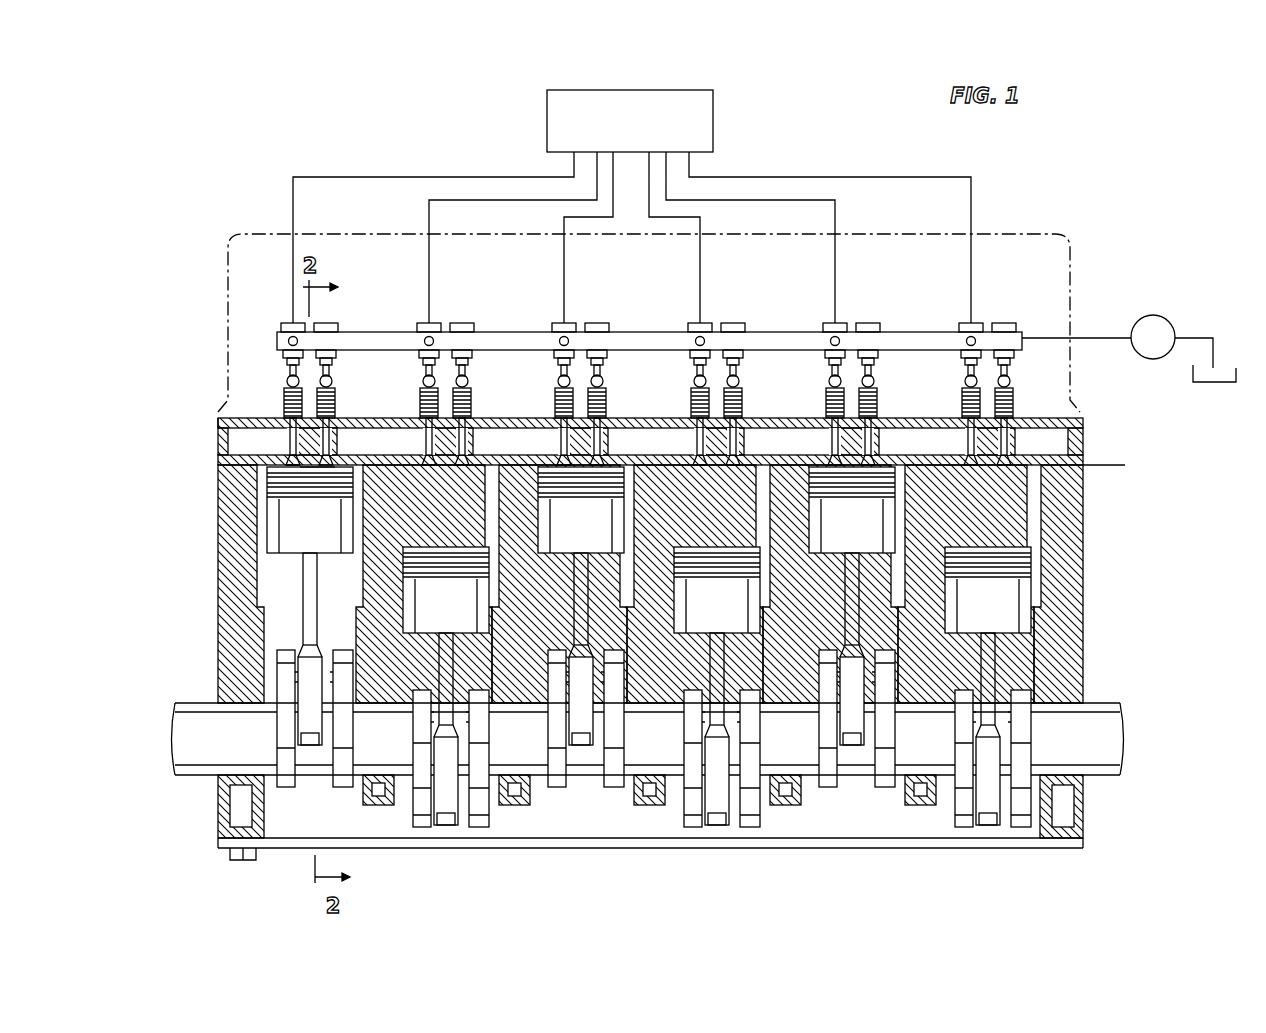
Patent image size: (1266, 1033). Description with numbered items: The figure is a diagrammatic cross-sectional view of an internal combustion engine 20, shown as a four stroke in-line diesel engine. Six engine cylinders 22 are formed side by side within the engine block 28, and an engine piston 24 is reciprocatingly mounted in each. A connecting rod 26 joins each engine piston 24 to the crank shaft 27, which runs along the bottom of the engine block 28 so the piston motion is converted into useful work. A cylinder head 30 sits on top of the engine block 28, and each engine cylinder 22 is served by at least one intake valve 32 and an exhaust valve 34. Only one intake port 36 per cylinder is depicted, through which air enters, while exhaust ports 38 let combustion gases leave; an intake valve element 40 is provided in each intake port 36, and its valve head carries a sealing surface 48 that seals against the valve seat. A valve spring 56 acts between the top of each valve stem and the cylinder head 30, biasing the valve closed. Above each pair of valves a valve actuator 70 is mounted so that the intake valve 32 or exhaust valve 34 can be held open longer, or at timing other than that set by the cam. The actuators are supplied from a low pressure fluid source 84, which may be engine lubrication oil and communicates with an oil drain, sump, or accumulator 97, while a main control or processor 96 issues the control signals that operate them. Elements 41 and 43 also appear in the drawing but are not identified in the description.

The internal combustion engine 20 is at (1108, 227).
The engine cylinder 22 is at (327, 610).
The engine piston 24 is at (270, 602).
The connecting rod 26 is at (307, 612).
The crank shaft 27 is at (200, 762).
The engine block 28 is at (232, 480).
The cylinder head 30 is at (1078, 445).
The intake valve 32 is at (329, 440).
The exhaust valve 34 is at (288, 430).
The intake port 36 is at (327, 468).
The exhaust port 38 is at (290, 462).
The intake valve element 40 is at (300, 470).
The valve stem 41 is at (428, 465).
The valve guide 43 is at (226, 416).
The sealing surface 48 is at (288, 456).
The valve spring 56 is at (288, 378).
The valve actuator 70 is at (291, 322).
The low pressure fluid source 84 is at (1157, 320).
The main control or processor 96 is at (547, 116).
The oil drain, sump, or accumulator 97 is at (1236, 368).